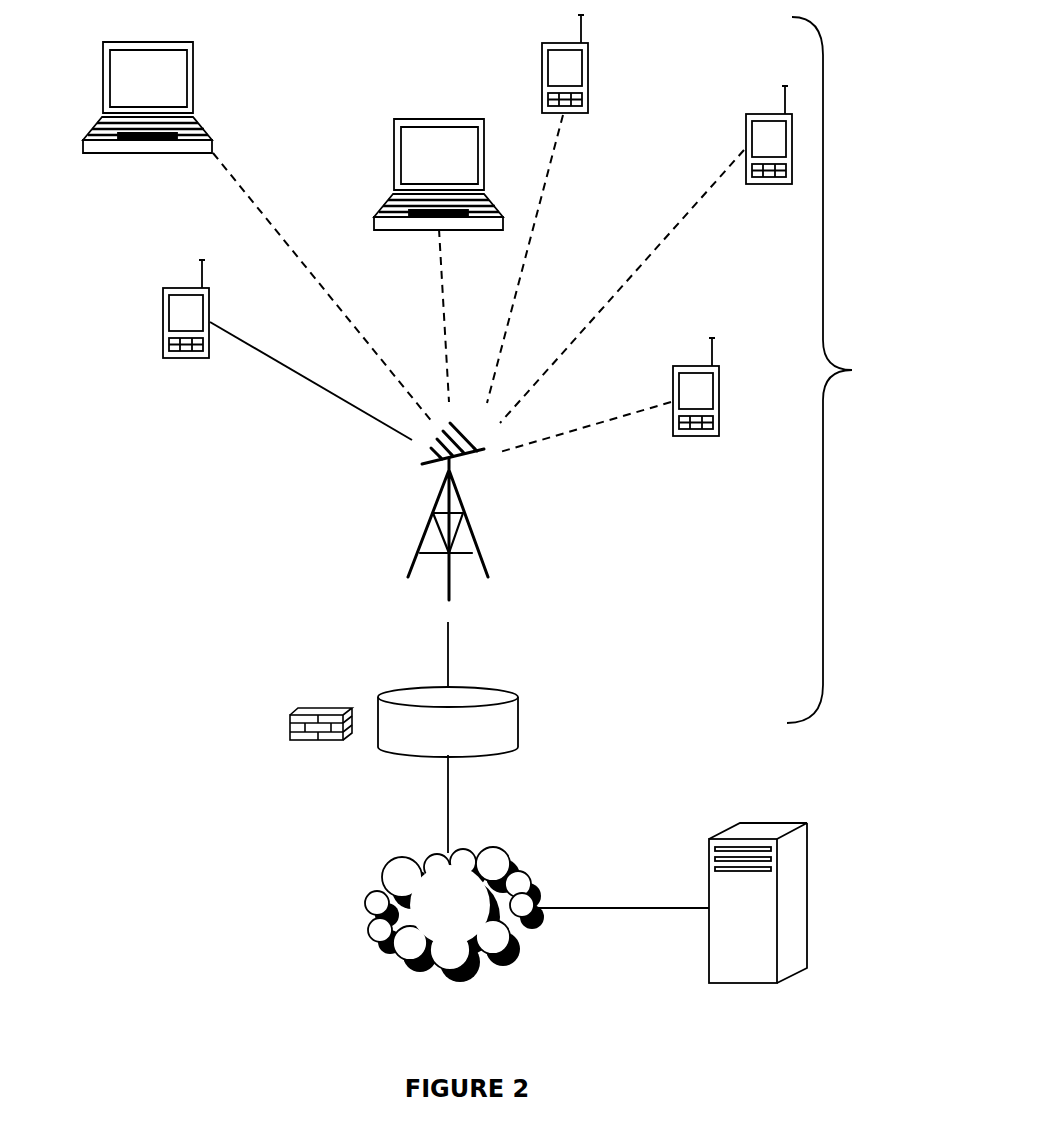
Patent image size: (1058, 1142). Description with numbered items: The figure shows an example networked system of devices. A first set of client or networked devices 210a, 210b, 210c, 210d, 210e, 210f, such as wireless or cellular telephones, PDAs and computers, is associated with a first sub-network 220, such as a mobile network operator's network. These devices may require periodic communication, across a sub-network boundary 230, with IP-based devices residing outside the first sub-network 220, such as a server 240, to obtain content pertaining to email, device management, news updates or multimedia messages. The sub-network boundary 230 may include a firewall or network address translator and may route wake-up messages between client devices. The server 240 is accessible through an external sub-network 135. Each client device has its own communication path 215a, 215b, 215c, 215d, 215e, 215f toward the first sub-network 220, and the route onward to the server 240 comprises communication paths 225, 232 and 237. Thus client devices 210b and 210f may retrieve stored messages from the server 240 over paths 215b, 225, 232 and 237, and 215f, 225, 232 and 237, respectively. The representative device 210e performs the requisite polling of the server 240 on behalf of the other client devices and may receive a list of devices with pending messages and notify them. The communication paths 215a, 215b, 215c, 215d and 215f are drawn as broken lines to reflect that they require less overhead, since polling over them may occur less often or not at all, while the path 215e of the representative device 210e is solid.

The client device 210a is at (147, 84).
The client device 210b is at (438, 160).
The client device 210c is at (554, 64).
The client device 210d is at (758, 134).
The representative device 210e is at (174, 308).
The client device 210f is at (684, 385).
The communication path 215a is at (302, 275).
The communication path 215b is at (433, 258).
The communication path 215c is at (557, 160).
The communication path 215d is at (680, 236).
The communication path 215e is at (306, 379).
The communication path 215f is at (512, 450).
The first sub-network 220 is at (845, 370).
The communication path 225 is at (456, 659).
The sub-network boundary 230 is at (448, 707).
The communication path 232 is at (456, 818).
The external sub-network 135 is at (454, 907).
The communication path 237 is at (601, 903).
The server 240 is at (758, 888).